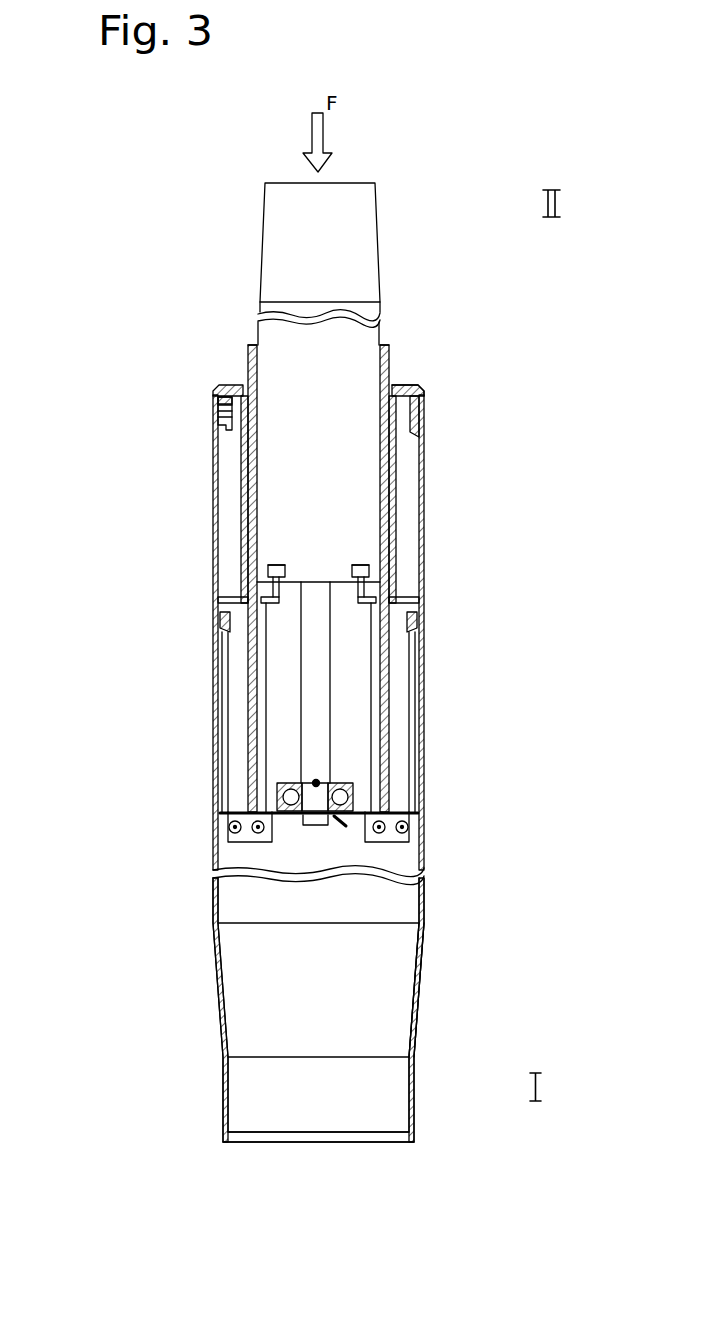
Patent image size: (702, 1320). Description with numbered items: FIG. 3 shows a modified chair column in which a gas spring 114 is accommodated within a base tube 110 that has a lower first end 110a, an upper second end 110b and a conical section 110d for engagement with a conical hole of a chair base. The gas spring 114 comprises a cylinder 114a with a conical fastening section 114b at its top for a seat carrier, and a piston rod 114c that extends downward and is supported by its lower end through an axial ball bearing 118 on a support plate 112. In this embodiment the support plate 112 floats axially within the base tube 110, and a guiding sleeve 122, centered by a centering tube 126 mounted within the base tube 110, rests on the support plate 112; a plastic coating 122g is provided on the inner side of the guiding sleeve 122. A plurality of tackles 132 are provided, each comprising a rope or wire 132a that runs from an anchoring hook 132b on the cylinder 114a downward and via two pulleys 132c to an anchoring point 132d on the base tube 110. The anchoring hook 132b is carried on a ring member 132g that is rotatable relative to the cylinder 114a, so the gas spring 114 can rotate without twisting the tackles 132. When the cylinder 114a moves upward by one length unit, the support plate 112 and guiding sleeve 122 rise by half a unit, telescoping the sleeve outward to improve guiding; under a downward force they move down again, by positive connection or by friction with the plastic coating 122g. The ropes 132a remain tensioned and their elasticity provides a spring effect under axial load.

The base tube 110 is at (425, 490).
The first end of base tube 110a is at (414, 1137).
The second end of base tube 110b is at (425, 414).
The conical section 110d is at (422, 982).
The support plate 112 is at (399, 816).
The gas spring 114 is at (273, 445).
The cylinder 114a is at (275, 487).
The conical fastening section 114b is at (262, 209).
The piston rod 114c is at (313, 731).
The axial ball bearing 118 is at (290, 784).
The guiding sleeve 122 is at (390, 362).
The plastic coating 122g is at (257, 362).
The centering tube 126 is at (403, 385).
The tackle 132 is at (220, 710).
The rope 132a is at (224, 680).
The anchoring hook 132b is at (268, 584).
The pulleys 132c is at (252, 836).
The anchoring point 132d is at (213, 630).
The ring member 132g is at (282, 563).